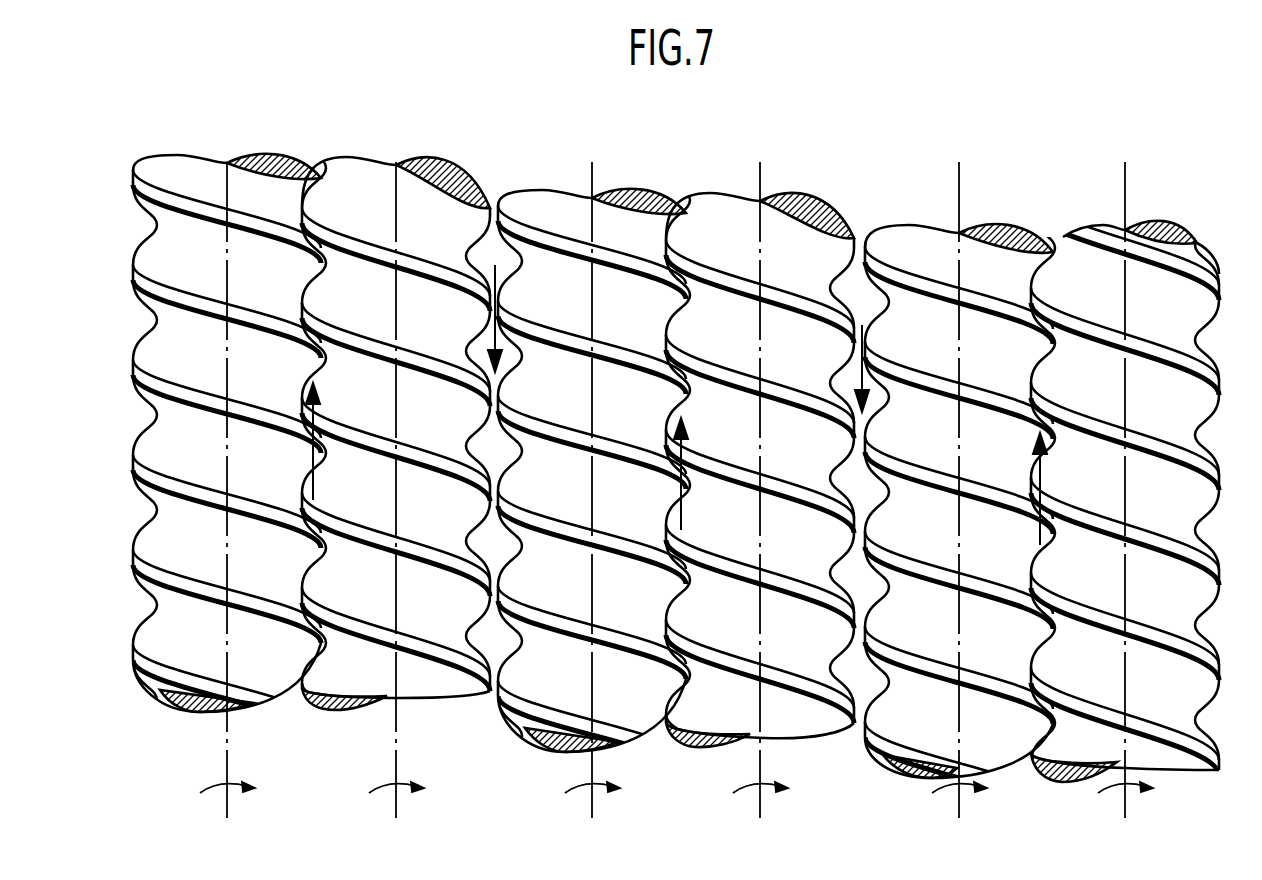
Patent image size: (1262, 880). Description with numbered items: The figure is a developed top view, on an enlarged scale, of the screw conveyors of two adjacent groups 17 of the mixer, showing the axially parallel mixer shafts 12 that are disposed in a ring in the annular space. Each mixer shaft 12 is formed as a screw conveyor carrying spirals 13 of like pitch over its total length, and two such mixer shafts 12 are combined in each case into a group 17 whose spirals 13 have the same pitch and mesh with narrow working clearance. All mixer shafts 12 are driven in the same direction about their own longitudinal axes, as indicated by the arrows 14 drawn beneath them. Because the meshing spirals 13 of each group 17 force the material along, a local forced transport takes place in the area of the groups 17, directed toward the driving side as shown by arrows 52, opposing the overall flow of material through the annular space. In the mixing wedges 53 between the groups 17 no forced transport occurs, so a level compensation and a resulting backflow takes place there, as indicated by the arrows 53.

The mixer shaft 12 is at (657, 206).
The spiral 13 is at (506, 242).
The arrow 14 is at (384, 788).
The group 17 is at (495, 148).
The arrow 52 is at (308, 455).
The mixing wedge / arrow 53 is at (498, 276).